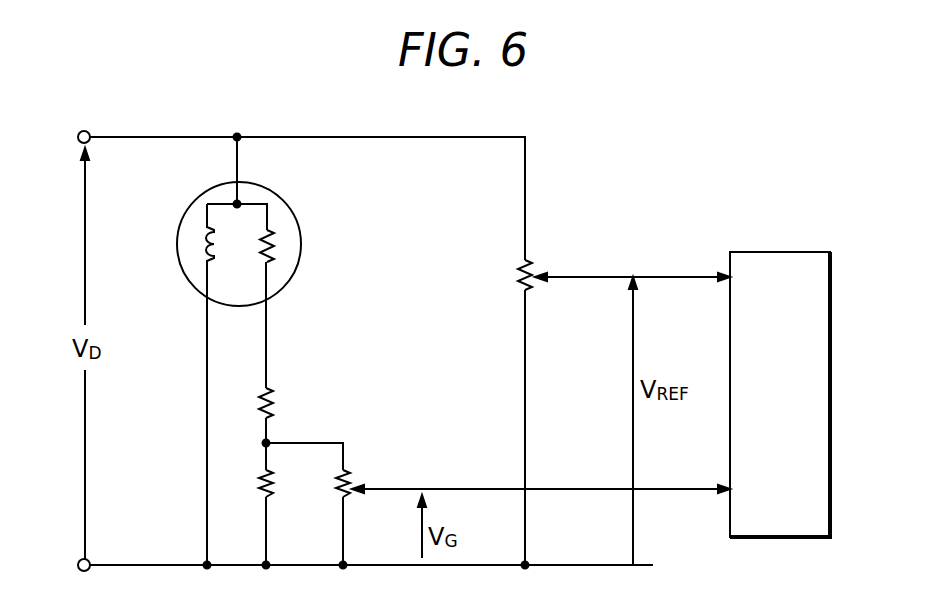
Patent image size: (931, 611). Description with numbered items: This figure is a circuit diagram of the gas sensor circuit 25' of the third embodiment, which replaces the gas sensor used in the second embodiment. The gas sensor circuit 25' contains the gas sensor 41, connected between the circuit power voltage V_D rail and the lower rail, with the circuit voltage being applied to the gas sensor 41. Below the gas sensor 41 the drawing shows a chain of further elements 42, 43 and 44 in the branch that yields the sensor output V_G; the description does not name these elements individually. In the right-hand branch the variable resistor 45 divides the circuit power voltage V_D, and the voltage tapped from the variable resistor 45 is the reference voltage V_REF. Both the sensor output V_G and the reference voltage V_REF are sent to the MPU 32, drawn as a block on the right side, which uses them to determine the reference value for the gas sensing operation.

The gas sensor circuit 25' is at (577, 156).
The MPU 32 is at (801, 250).
The gas sensor 41 is at (287, 216).
The resistor 42 is at (276, 408).
The resistor 43 is at (280, 494).
The variable resistor 44 is at (353, 477).
The variable resistor 45 is at (512, 276).